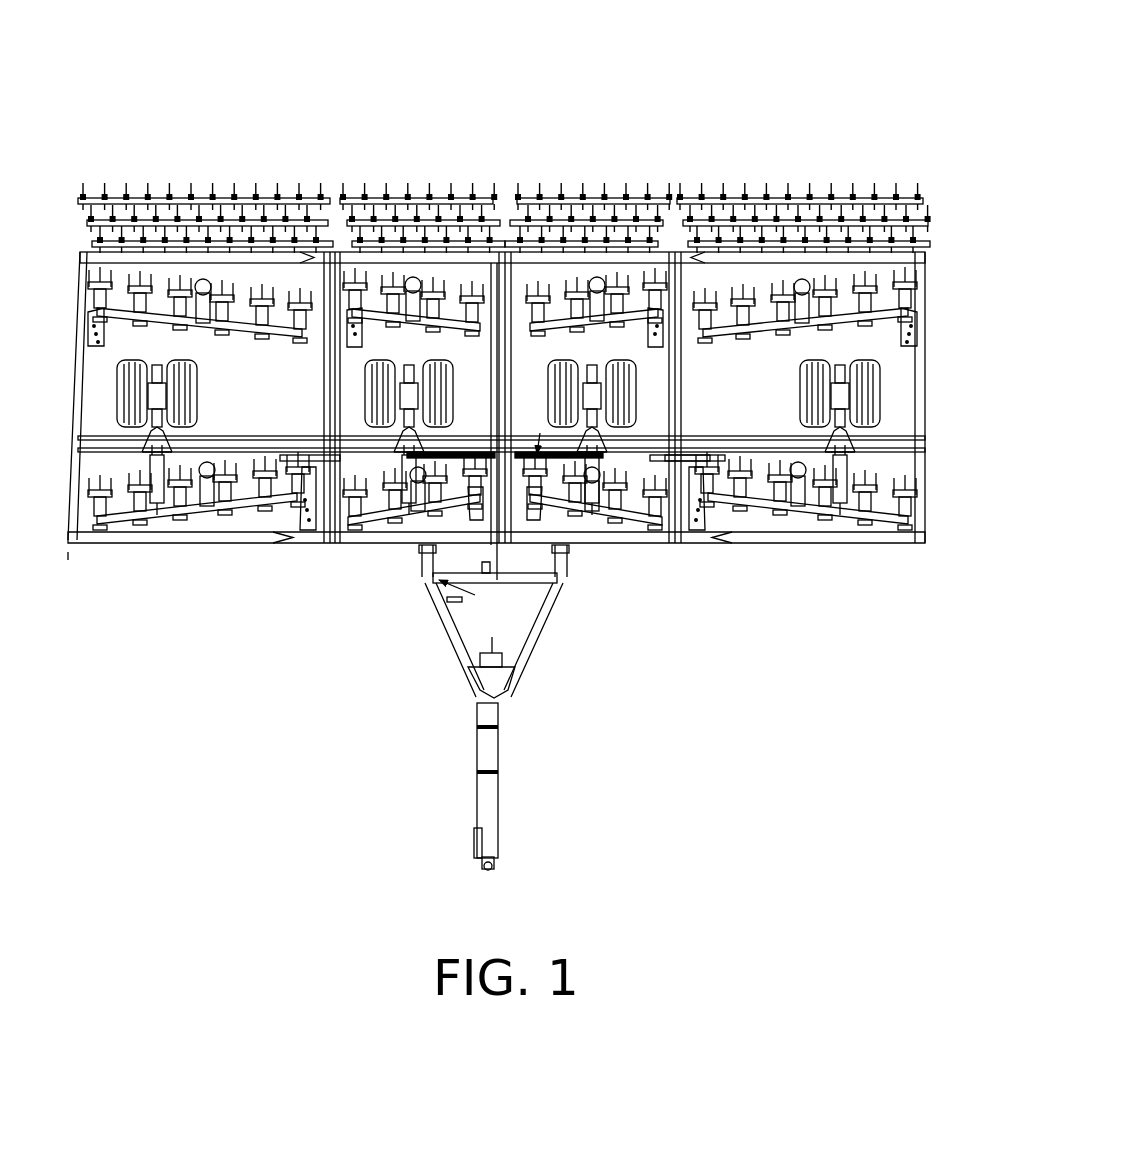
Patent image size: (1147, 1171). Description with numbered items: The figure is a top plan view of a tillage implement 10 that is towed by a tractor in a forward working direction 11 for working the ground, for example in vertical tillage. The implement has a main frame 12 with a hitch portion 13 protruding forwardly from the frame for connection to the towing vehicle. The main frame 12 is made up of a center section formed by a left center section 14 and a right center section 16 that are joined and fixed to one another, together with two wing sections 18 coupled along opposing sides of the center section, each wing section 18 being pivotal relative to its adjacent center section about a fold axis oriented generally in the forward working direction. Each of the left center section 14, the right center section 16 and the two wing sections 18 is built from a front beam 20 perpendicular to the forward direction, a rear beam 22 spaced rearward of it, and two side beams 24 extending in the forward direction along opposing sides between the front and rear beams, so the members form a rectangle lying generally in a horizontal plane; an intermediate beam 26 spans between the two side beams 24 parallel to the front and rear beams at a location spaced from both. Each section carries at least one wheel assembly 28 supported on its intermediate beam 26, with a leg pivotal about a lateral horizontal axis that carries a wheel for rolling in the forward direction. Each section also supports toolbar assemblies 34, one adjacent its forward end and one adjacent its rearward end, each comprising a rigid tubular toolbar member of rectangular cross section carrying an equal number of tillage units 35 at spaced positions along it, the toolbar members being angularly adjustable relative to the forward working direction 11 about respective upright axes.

The tillage implement 10 is at (524, 436).
The forward working direction 11 is at (728, 712).
The main frame 12 is at (521, 419).
The hitch portion 13 is at (504, 752).
The left center section 14 is at (512, 213).
The right center section 16 is at (467, 258).
The wing section 18 is at (193, 258).
The front beam 20 is at (858, 543).
The rear beam 22 is at (924, 263).
The side beam 24 is at (918, 358).
The intermediate beam 26 is at (733, 445).
The wheel assembly 28 is at (796, 385).
The toolbar assembly 34 is at (746, 522).
The tillage unit 35 is at (883, 478).